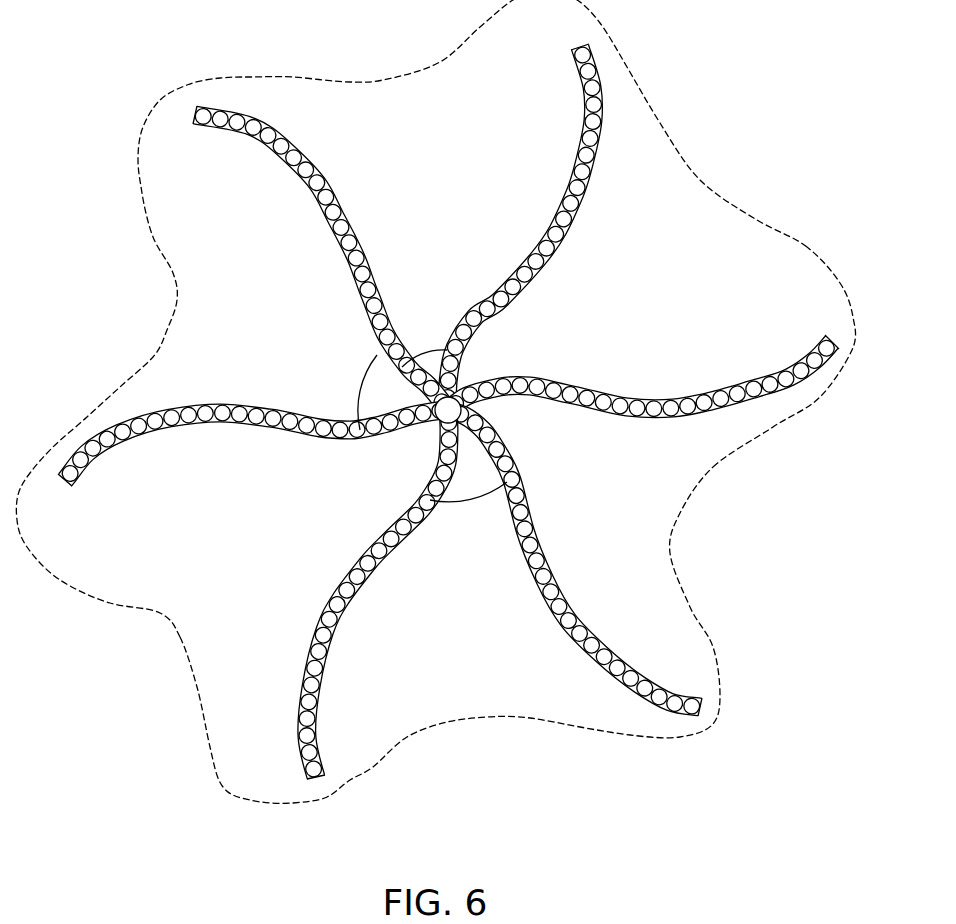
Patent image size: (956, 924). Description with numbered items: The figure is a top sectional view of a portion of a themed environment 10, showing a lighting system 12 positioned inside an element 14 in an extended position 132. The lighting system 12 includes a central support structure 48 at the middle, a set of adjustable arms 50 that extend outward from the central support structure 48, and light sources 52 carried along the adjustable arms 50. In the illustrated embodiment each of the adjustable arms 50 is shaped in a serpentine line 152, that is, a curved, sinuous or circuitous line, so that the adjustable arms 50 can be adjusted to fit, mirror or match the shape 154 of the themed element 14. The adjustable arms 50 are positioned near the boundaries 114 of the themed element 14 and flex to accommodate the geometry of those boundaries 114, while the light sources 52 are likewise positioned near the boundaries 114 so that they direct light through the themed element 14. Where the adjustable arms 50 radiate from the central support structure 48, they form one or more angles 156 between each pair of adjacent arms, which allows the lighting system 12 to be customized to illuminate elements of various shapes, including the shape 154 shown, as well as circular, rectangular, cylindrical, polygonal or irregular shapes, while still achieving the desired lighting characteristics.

The themed environment 10 is at (84, 110).
The lighting system 12 is at (562, 146).
The element 14 is at (156, 165).
The central support structure 48 is at (453, 400).
The adjustable arms 50 is at (474, 302).
The light sources 52 is at (783, 374).
The boundaries 114 is at (367, 770).
The extended position 132 is at (768, 601).
The serpentine line 152 is at (358, 588).
The shape 154 is at (818, 403).
The angles 156 is at (417, 347).